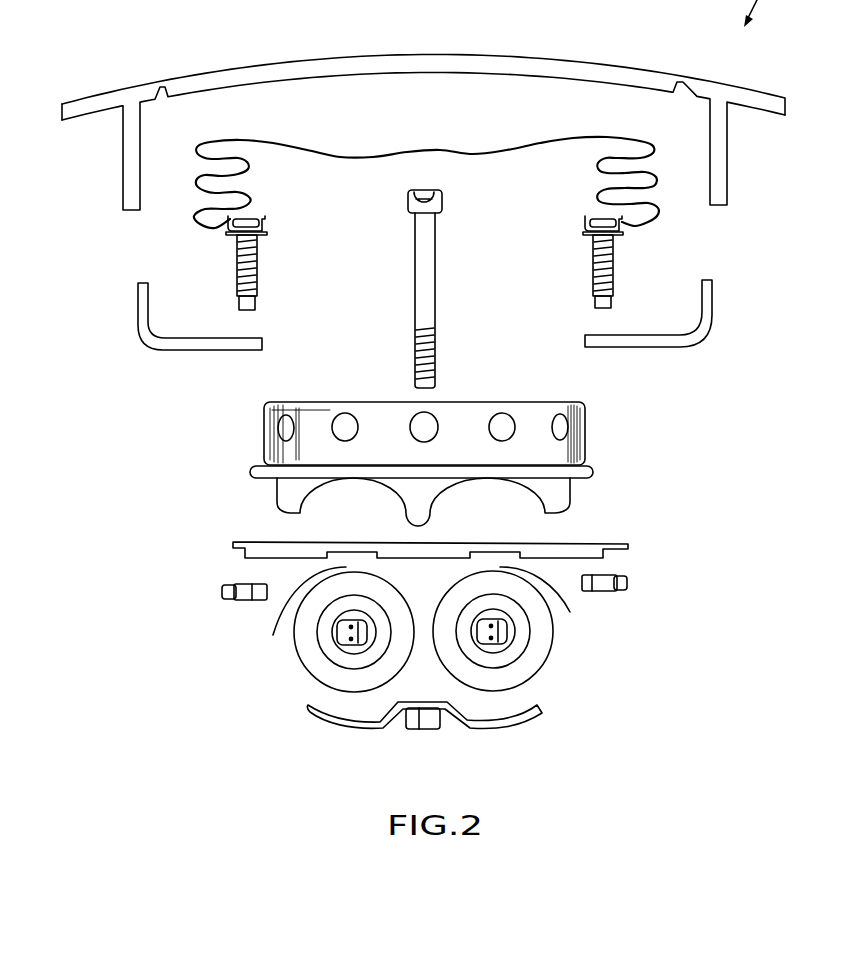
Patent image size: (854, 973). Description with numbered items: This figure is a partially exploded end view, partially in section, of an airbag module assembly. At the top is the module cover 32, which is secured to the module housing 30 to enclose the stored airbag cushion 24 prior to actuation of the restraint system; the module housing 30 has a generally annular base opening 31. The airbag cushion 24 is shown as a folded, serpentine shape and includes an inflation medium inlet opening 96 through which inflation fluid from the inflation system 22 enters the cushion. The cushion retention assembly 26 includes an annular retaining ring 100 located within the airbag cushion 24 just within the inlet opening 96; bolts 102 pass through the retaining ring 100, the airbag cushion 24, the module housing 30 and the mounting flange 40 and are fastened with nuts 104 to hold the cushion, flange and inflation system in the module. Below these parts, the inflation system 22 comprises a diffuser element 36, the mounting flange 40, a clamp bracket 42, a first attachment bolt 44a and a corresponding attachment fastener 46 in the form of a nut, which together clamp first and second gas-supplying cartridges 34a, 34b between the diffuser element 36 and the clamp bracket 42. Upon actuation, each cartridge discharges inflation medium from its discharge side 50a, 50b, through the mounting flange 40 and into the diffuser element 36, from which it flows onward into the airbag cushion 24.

The inflation assembly 22 is at (617, 681).
The airbag cushion 24 is at (462, 152).
The cushion retention assembly 26 is at (206, 261).
The module housing 30 is at (146, 336).
The annular base opening 31 is at (568, 336).
The module cover 32 is at (130, 98).
The first gas-supplying cartridge 34a is at (313, 656).
The second gas-supplying cartridge 34b is at (520, 669).
The diffuser element 36 is at (567, 450).
The mounting flange 40 is at (612, 541).
The clamp bracket 42 is at (507, 722).
The first attachment bolt 44a is at (423, 277).
The attachment fastener 46 is at (427, 718).
The discharge side of first cartridge 50a is at (304, 641).
The discharge side of second cartridge 50b is at (537, 642).
The inflation medium inlet opening 96 is at (289, 256).
The retaining ring 100 is at (263, 226).
The bolts 102 is at (247, 222).
The nuts 104 is at (225, 590).